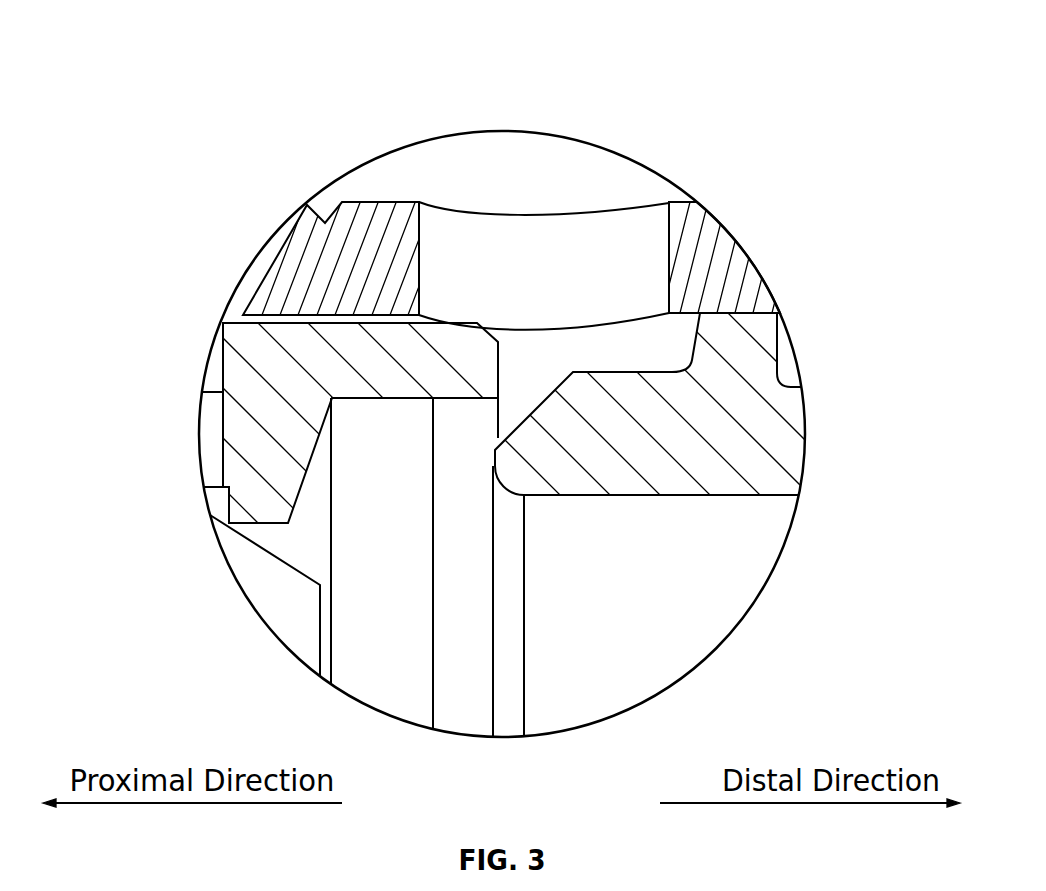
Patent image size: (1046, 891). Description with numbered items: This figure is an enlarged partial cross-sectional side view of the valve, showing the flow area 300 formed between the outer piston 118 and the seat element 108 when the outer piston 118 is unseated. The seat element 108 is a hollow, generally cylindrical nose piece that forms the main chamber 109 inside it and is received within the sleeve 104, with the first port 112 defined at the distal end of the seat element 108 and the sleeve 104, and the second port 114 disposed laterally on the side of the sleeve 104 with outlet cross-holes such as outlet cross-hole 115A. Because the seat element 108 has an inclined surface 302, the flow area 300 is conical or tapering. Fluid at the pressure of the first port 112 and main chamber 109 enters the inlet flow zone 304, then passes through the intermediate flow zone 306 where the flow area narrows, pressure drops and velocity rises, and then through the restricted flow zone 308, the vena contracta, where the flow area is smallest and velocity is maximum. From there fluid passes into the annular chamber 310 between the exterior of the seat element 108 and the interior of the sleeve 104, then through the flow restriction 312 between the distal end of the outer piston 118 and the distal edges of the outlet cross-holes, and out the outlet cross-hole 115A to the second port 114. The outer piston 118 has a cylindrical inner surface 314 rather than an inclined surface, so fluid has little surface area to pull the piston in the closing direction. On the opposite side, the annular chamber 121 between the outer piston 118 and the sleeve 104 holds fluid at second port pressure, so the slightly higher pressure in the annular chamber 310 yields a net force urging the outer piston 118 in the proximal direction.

The sleeve 104 is at (717, 270).
The seat element 108 is at (738, 342).
The main chamber 109 is at (394, 664).
The first port 112 is at (726, 662).
The second port 114 is at (645, 182).
The outlet cross-hole 115A is at (440, 228).
The outer piston 118 is at (248, 333).
The annular chamber 121 is at (208, 372).
The flow area 300 is at (482, 437).
The inclined surface 302 is at (535, 403).
The inlet flow zone 304 is at (442, 450).
The intermediate flow zone 306 is at (482, 408).
The restricted flow zone 308 is at (516, 392).
The annular chamber 310 is at (607, 344).
The flow restriction 312 is at (538, 306).
The cylindrical inner surface 314 is at (453, 380).